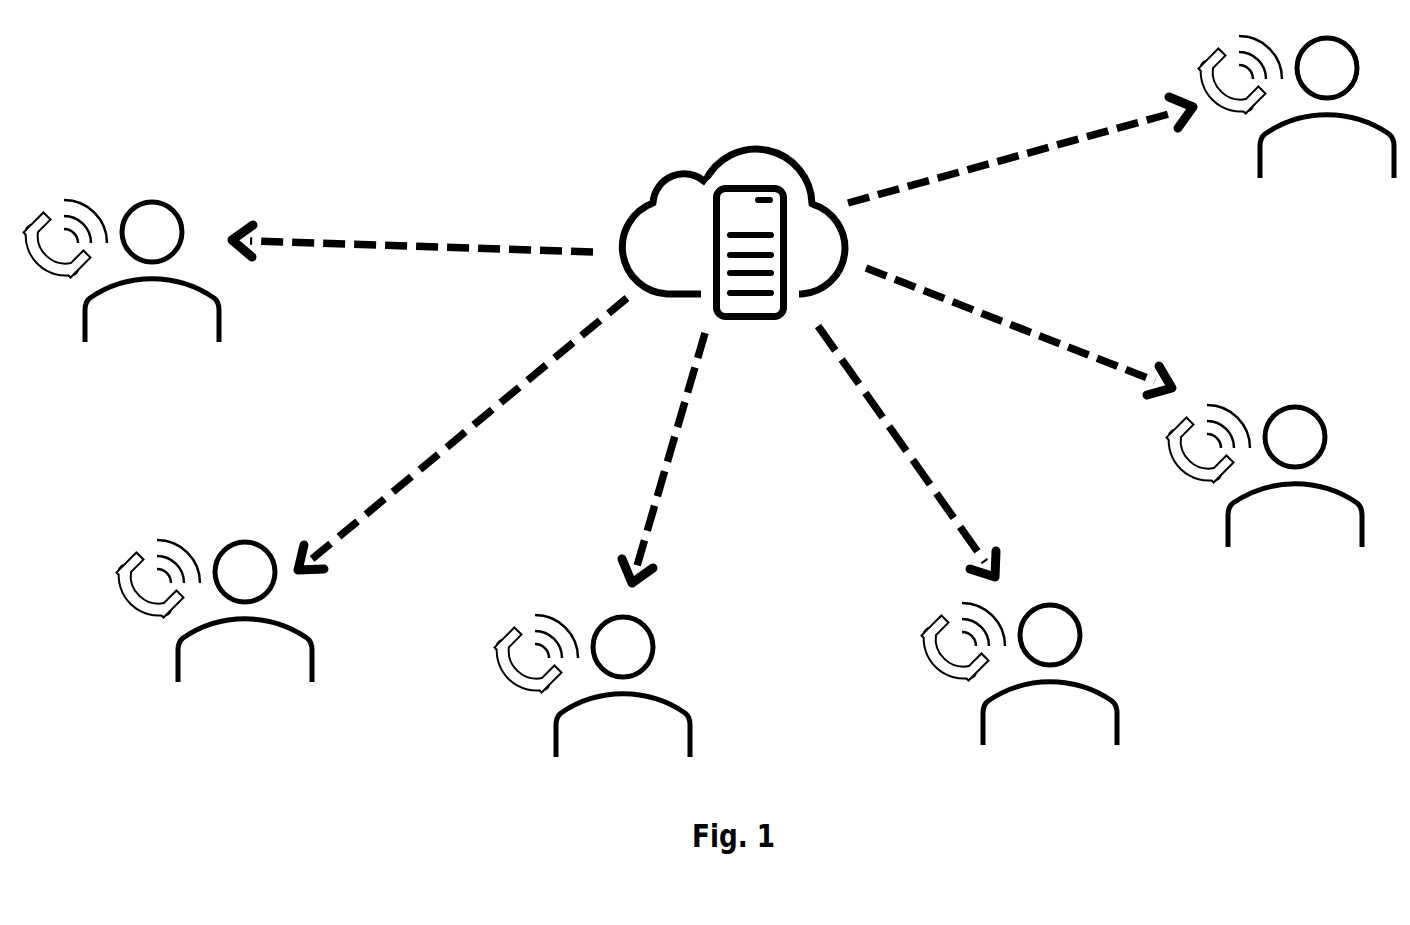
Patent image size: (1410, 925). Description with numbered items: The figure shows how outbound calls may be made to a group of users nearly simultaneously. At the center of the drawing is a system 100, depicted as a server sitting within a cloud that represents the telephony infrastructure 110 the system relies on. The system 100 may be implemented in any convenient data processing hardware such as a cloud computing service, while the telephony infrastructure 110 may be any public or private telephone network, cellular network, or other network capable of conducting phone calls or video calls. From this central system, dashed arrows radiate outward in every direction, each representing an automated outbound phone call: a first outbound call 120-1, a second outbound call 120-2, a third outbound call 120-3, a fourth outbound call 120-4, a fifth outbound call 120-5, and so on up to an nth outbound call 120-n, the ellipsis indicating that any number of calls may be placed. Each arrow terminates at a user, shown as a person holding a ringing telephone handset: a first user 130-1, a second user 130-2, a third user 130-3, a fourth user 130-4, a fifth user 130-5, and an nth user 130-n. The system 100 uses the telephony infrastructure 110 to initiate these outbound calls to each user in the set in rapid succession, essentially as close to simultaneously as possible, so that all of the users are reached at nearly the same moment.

The system 100 is at (777, 325).
The telephony infrastructure 110 is at (791, 143).
The outbound call 120-1 is at (412, 236).
The outbound call 120-2 is at (415, 457).
The outbound call 120-3 is at (652, 477).
The outbound call 120-4 is at (874, 432).
The outbound call 120-5 is at (1004, 335).
The outbound call 120-n is at (1045, 158).
The user 130-1 is at (125, 292).
The user 130-2 is at (218, 632).
The user 130-3 is at (596, 707).
The user 130-4 is at (1023, 695).
The user 130-5 is at (1268, 497).
The user 130-n is at (1300, 128).